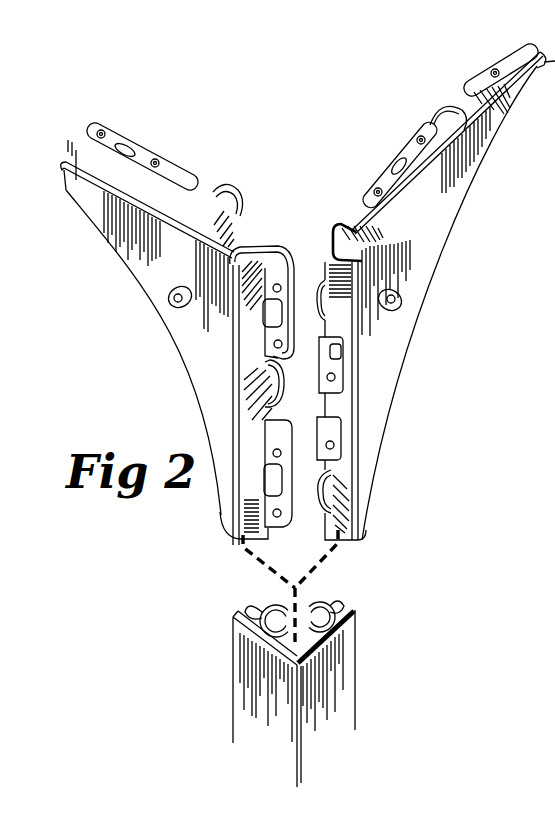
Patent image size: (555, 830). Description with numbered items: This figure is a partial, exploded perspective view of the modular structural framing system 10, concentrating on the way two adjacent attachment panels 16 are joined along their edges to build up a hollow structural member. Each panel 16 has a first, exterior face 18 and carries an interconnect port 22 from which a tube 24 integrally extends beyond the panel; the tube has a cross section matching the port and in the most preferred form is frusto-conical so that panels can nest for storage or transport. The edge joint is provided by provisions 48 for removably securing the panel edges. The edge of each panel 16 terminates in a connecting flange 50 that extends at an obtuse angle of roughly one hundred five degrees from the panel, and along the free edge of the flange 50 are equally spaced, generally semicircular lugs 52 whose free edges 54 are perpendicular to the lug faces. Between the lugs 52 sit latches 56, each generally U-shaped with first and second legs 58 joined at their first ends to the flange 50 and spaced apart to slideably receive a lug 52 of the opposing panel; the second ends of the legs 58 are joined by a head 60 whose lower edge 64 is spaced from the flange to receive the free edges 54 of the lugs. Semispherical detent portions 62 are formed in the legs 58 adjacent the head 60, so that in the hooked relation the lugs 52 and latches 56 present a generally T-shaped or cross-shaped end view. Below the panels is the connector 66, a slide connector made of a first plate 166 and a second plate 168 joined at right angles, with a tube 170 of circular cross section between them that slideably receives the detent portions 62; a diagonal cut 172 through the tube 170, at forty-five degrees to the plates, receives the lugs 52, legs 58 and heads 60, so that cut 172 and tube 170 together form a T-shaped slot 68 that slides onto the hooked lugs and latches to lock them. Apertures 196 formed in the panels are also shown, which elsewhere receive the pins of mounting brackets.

The modular structural framing system 10 is at (281, 100).
The attachment panel 16 is at (110, 263).
The first, exterior face 18 is at (488, 138).
The interconnect port 22 is at (110, 232).
The tube 24 is at (527, 127).
The provisions for removably securing panel edges 48 is at (308, 148).
The connecting flange 50 is at (290, 258).
The lug 52 is at (243, 193).
The free edge of lug 54 is at (218, 188).
The latch 56 is at (92, 110).
The leg 58 is at (108, 150).
The head 60 is at (130, 150).
The detent portion 62 is at (97, 131).
The lower edge of head 64 is at (113, 192).
The connector 66 is at (226, 709).
The T-shaped slot 68 is at (277, 607).
The first plate 166 is at (238, 667).
The second plate 168 is at (347, 660).
The tube 170 is at (316, 598).
The diagonal cut 172 is at (290, 651).
The aperture 196 is at (170, 312).